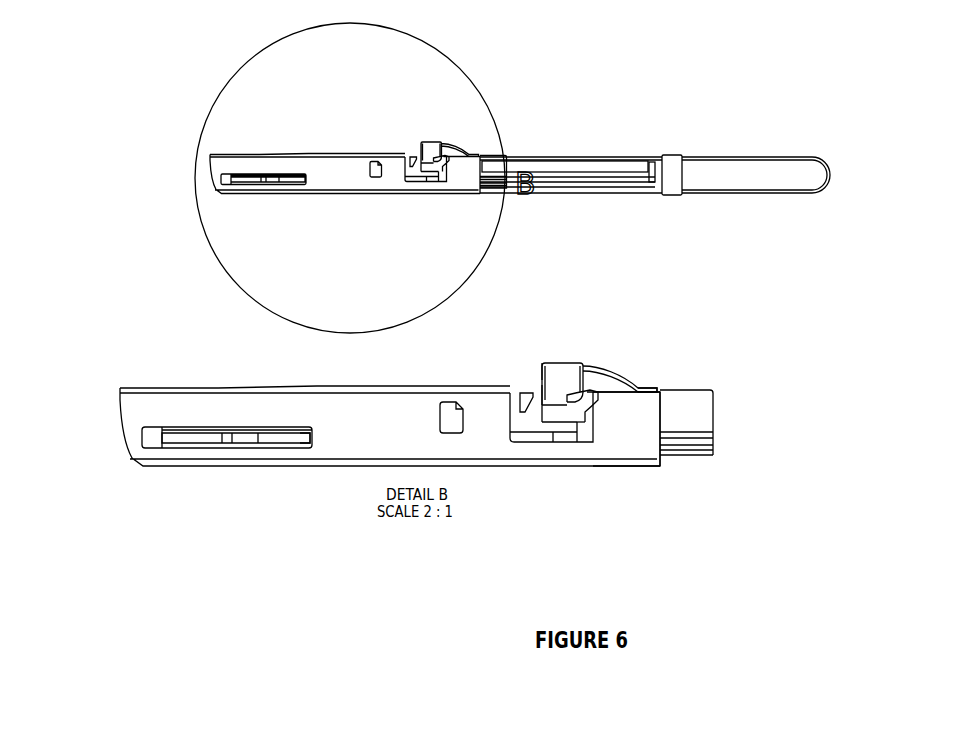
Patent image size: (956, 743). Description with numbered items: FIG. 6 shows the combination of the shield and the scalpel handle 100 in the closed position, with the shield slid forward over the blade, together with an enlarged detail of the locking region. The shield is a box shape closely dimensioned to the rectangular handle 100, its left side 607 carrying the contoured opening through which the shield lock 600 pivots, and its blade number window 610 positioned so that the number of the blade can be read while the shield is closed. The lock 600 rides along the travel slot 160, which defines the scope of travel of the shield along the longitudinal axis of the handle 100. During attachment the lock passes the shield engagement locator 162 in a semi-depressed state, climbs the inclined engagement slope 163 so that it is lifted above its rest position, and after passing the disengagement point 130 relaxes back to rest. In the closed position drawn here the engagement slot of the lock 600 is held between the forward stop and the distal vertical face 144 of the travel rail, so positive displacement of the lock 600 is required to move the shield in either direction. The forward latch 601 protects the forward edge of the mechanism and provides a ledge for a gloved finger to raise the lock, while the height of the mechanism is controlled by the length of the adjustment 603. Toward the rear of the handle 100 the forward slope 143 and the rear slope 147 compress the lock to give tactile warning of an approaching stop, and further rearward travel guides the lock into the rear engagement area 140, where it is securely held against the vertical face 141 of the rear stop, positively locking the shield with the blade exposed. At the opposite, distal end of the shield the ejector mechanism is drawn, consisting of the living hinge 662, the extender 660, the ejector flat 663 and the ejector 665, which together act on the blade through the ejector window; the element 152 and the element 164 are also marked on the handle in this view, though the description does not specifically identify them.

The handle 100 is at (730, 173).
The disengagement point 130 is at (537, 407).
The rear engagement area 140 is at (614, 163).
The vertical face of rear stop 141 is at (602, 165).
The forward slope 143 is at (583, 422).
The distal vertical face of travel rail 144 is at (565, 412).
The rear slope 147 is at (593, 160).
The end fitting 152 is at (655, 173).
The travel slot 160 is at (687, 410).
The shield engagement locator 162 is at (518, 397).
The engagement slope 163 is at (530, 393).
The spring arm 164 is at (620, 377).
The shield lock 600 is at (562, 363).
The forward latch 601 is at (533, 367).
The adjustment 603 is at (586, 396).
The left side of shield 607 is at (628, 438).
The blade number window 610 is at (448, 419).
The extender 660 is at (287, 447).
The living hinge of ejector 662 is at (317, 445).
The ejector flat 663 is at (238, 447).
The ejector 665 is at (165, 440).